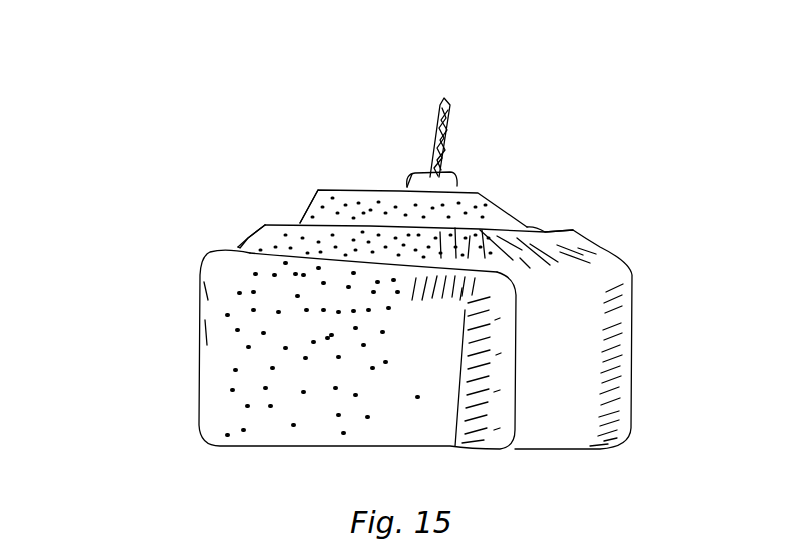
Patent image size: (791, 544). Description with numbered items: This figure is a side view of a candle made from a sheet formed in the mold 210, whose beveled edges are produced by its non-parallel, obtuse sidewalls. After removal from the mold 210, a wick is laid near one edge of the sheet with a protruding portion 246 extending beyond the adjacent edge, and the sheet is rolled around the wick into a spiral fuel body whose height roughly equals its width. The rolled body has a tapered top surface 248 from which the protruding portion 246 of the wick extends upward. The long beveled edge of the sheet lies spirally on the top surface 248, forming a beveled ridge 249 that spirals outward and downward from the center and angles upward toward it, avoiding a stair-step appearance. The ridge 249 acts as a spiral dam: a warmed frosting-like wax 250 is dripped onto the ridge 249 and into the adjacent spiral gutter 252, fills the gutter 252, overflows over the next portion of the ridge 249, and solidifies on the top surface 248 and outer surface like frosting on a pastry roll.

The mold 210 is at (313, 98).
The protruding portion of the wick 246 is at (446, 108).
The top surface 248 is at (511, 180).
The beveled ridge 249 is at (327, 190).
The wax 250 is at (507, 217).
The gutter 252 is at (285, 218).